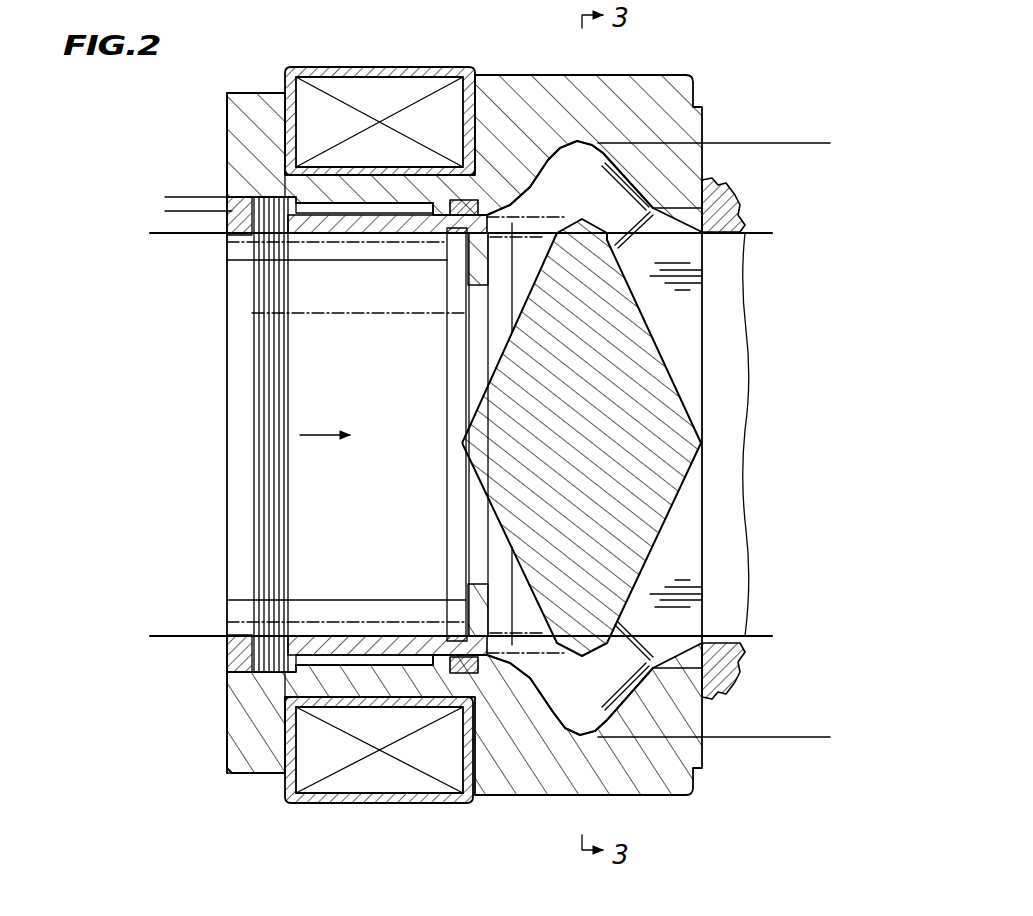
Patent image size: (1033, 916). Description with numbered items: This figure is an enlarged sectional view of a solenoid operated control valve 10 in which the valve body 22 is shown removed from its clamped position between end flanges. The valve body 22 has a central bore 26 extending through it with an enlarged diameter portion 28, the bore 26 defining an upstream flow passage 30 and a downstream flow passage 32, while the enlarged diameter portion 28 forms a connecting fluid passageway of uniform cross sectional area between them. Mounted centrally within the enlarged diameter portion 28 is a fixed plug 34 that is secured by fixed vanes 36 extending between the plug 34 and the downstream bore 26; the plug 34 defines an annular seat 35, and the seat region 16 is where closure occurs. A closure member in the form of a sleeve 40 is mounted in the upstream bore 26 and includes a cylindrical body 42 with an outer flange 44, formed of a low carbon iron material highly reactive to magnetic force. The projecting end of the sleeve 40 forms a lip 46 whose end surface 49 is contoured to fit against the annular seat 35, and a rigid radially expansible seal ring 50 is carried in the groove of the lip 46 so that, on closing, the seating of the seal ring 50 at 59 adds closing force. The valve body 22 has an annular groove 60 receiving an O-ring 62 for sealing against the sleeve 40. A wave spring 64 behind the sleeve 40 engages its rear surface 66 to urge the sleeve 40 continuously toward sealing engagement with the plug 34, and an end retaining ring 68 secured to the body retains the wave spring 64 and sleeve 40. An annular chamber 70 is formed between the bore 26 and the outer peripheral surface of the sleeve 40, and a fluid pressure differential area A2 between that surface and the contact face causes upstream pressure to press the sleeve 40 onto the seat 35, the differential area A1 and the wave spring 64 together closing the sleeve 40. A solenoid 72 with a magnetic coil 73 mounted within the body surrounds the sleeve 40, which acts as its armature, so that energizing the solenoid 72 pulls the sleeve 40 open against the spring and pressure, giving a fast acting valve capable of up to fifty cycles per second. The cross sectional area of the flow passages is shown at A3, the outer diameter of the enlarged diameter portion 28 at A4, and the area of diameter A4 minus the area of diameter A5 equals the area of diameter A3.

The solenoid valve 10 is at (450, 56).
The valve seat 16 is at (720, 206).
The valve body 22 is at (585, 94).
The central bore 26 is at (340, 217).
The enlarged diameter portion 28 is at (588, 153).
The upstream flow passage 30 is at (347, 398).
The downstream flow passage 32 is at (736, 365).
The plug 34 is at (489, 470).
The annular seat 35 is at (567, 213).
The fixed vanes 36 is at (683, 300).
The sleeve 40 is at (417, 246).
The cylindrical body 42 is at (377, 233).
The outer flange 44 is at (292, 200).
The lip 46 is at (485, 226).
The end surface 49 is at (503, 213).
The seal ring 50 is at (455, 234).
The seating location of seal ring 59 is at (557, 215).
The annular groove 60 is at (447, 628).
The O-ring 62 is at (468, 670).
The wave spring 64 is at (255, 650).
The rear surface 66 is at (286, 602).
The end retaining ring 68 is at (232, 678).
The annular chamber 70 is at (363, 663).
The solenoid 72 is at (371, 88).
The magnetic coil 73 is at (320, 108).
The differential area A1 is at (177, 230).
The fluid pressure differential area A2 is at (533, 255).
The flow passage cross sectional area A3 is at (157, 235).
The outer diameter of enlarged diameter portion A4 is at (822, 735).
The plug diameter A5 is at (583, 222).